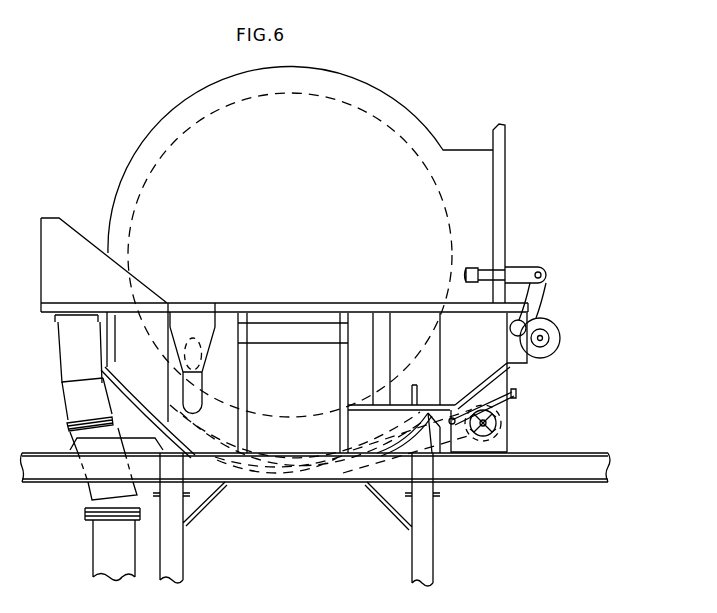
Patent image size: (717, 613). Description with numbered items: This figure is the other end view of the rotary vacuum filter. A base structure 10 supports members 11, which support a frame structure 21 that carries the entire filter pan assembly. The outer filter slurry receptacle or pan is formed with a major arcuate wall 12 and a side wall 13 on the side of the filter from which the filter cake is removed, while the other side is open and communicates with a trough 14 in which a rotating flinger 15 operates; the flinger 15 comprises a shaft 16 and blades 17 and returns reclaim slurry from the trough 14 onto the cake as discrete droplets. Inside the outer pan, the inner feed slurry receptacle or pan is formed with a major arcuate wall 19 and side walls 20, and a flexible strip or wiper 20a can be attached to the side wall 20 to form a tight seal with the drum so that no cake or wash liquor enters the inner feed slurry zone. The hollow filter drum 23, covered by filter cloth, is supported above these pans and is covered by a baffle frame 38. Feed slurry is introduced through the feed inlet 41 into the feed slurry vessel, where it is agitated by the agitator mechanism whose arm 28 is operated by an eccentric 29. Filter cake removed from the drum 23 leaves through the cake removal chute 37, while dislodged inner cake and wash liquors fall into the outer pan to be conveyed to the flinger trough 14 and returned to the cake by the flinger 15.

The base structure 10 is at (585, 462).
The members 11 is at (157, 450).
The major arcuate wall 12 is at (270, 482).
The side wall 13 is at (102, 384).
The trough 14 is at (512, 428).
The rotating flinger 15 is at (513, 395).
The shaft 16 is at (483, 430).
The blades 17 is at (506, 415).
The major arcuate wall 19 is at (340, 479).
The side walls 20 is at (162, 410).
The flexible strip or wiper 20a is at (200, 392).
The frame structure 21 is at (246, 410).
The hollow filter drum 23 is at (418, 145).
The arm 28 is at (537, 256).
The eccentric 29 is at (545, 330).
The cake removal chute 37 is at (59, 368).
The baffle frame 38 is at (383, 93).
The feed inlet 41 is at (163, 358).